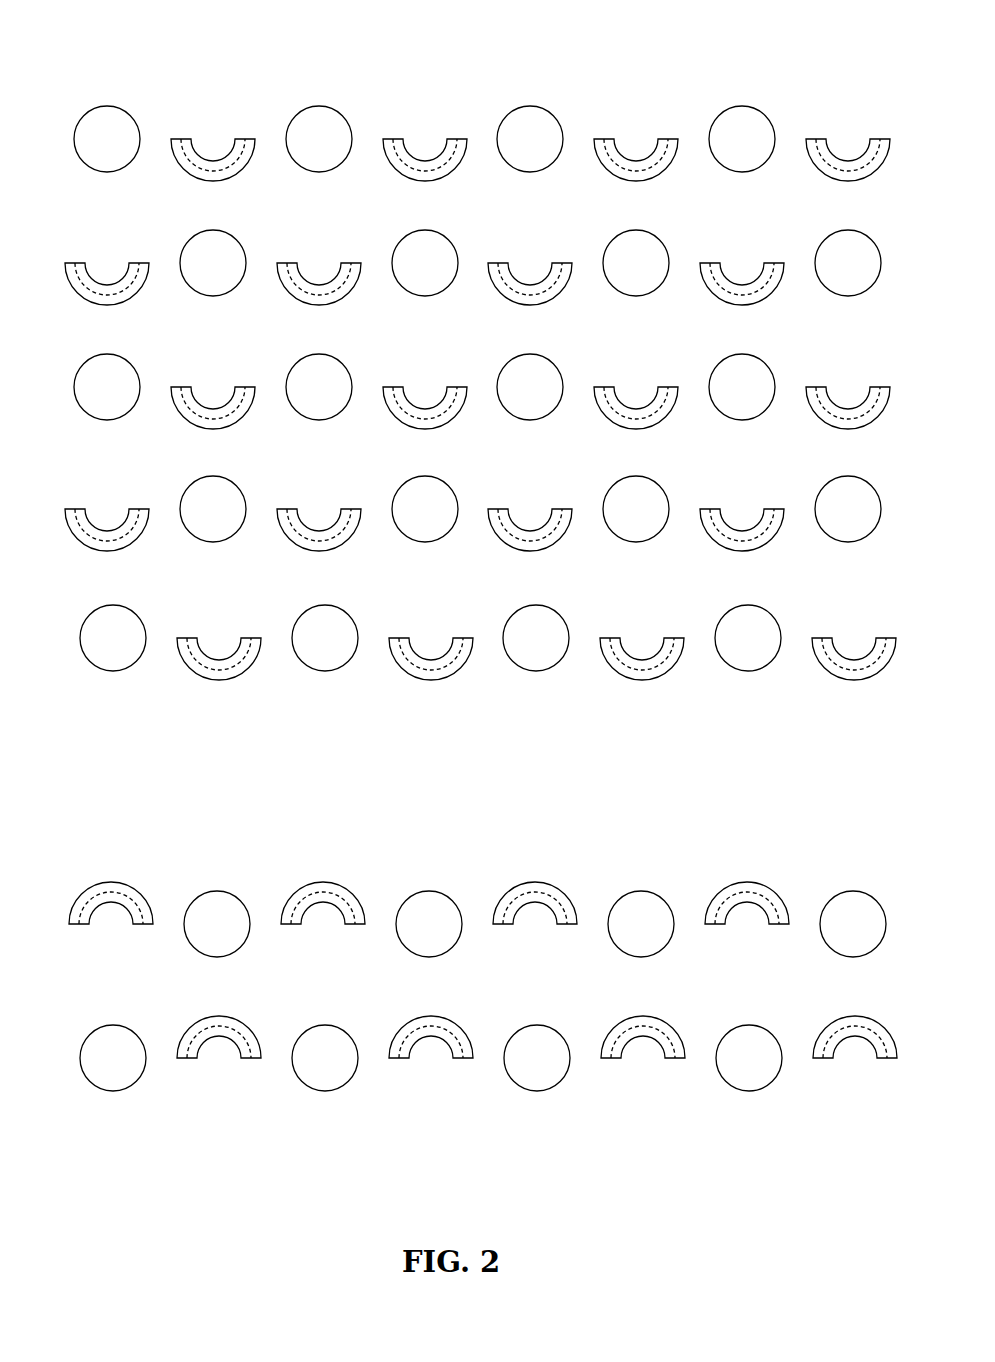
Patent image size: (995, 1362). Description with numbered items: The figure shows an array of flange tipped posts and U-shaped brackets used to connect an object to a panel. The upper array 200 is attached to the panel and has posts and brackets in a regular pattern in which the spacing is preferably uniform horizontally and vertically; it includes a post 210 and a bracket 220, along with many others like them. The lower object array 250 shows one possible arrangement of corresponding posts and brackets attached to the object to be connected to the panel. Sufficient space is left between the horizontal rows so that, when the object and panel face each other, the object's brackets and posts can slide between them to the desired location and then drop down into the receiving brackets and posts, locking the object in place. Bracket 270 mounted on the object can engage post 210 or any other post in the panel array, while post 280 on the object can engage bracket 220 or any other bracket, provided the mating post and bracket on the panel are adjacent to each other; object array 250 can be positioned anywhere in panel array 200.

The array 200 is at (115, 697).
The post 210 is at (110, 92).
The bracket 220 is at (220, 122).
The object array 250 is at (145, 1112).
The bracket 270 is at (123, 872).
The post 280 is at (227, 872).